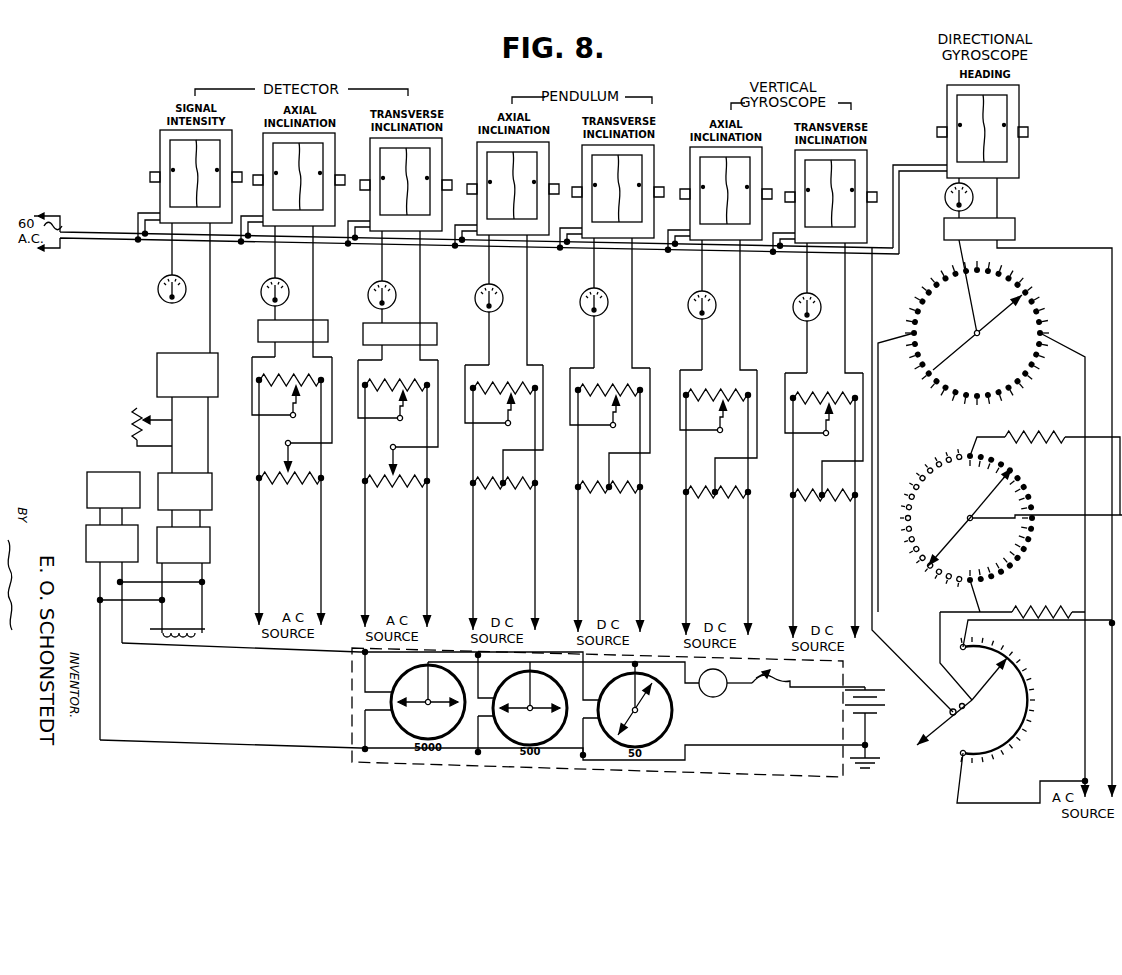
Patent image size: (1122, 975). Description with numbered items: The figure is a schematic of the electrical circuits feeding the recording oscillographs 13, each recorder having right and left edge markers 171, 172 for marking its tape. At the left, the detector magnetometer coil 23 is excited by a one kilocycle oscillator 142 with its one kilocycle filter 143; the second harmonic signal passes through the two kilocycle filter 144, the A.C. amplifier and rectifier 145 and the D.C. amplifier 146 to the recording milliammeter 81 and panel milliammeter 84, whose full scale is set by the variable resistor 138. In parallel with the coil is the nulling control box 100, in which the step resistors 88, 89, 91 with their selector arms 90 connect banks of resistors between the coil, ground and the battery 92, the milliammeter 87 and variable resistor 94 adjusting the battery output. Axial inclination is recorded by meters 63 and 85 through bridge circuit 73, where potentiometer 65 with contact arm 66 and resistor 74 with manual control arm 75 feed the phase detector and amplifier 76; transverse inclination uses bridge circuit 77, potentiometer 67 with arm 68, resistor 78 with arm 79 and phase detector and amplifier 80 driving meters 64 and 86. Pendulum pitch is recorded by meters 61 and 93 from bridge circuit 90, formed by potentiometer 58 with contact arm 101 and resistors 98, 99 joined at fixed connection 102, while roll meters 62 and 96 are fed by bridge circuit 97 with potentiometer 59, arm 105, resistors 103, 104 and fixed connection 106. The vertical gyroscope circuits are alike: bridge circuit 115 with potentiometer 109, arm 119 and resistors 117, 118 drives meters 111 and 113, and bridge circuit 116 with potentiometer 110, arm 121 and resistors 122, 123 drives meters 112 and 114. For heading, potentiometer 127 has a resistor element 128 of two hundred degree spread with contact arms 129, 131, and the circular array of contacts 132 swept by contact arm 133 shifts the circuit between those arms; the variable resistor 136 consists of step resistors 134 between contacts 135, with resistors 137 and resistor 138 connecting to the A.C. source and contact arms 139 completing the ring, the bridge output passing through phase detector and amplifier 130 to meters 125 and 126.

The recording oscillographs 13 is at (152, 204).
The detector magnetometer 23 is at (204, 629).
The potentiometer 58 is at (519, 380).
The potentiometer 59 is at (624, 383).
The recording milliammeter 61 is at (477, 169).
The recording milliammeter 62 is at (582, 171).
The recording milliammeter 63 is at (263, 163).
The recording milliammeter 64 is at (370, 165).
The potentiometer 65 is at (309, 374).
The variable contact arm 66 is at (296, 404).
The potentiometer 67 is at (412, 376).
The contact arm 68 is at (403, 407).
The bridge circuit 73 is at (262, 430).
The resistor 74 is at (304, 485).
The manual control arm 75 is at (291, 459).
The phase detector and amplifier 76 is at (258, 333).
The bridge circuit 77 is at (371, 444).
The resistor 78 is at (406, 489).
The variable contact arm 79 is at (395, 465).
The phase detector and amplifier 80 is at (437, 335).
The recording milliammeter 81 is at (160, 158).
The milliammeter 84 is at (158, 286).
The milliammeter 85 is at (261, 289).
The milliammeter 86 is at (368, 292).
The milliammeter 87 is at (726, 683).
The step resistor 88 is at (445, 666).
The step resistor 89 is at (553, 668).
The selector arm 90 is at (476, 451).
The step resistor 91 is at (662, 675).
The battery 92 is at (872, 734).
The milliammeter 93 is at (476, 295).
The variable resistor 94 is at (790, 681).
The milliammeter 96 is at (581, 299).
The bridge circuit 97 is at (583, 452).
The resistor 98 is at (488, 493).
The resistor 99 is at (515, 493).
The control box 100 is at (842, 680).
The contact arm 101 is at (507, 414).
The fixed connection 102 is at (506, 504).
The resistor 103 is at (591, 497).
The resistor 104 is at (618, 497).
The movable contact arm 105 is at (612, 416).
The fixed connection 106 is at (610, 507).
The potentiometer 109 is at (735, 388).
The potentiometer 110 is at (842, 391).
The recording milliammeter 111 is at (690, 173).
The recording milliammeter 112 is at (795, 176).
The milliammeter 113 is at (688, 302).
The milliammeter 114 is at (794, 304).
The bridge circuit 115 is at (684, 456).
The bridge circuit 116 is at (790, 459).
The resistor 117 is at (698, 502).
The resistor 118 is at (725, 502).
The variable contact arm 119 is at (719, 422).
The variable contact arm 121 is at (825, 425).
The resistor 122 is at (805, 505).
The resistor 123 is at (834, 505).
The recording milliammeter 125 is at (957, 138).
The milliammeter 126 is at (945, 194).
The potentiometer 127 is at (935, 658).
The resistor element 128 is at (1020, 714).
The contact arm 129 is at (993, 684).
The phase detector and amplifier 130 is at (1015, 230).
The contact arm 131 is at (938, 734).
The circular array of contacts 132 is at (909, 278).
The contact arm 133 is at (980, 338).
The step resistors 134 is at (1003, 564).
The contacts 135 is at (997, 480).
The variable resistor 136 is at (934, 576).
The resistors 137 is at (1070, 436).
The variable resistor 138 is at (132, 432).
The contact arms 139 is at (960, 524).
The one kilocycle A.C. oscillator 142 is at (87, 484).
The one kilocycle filter 143 is at (86, 535).
The two kilocycle filter 144 is at (210, 540).
The A.C. amplifier and rectifier 145 is at (204, 473).
The D.C. amplifier 146 is at (157, 382).
The right edge marker 171 is at (1035, 115).
The left edge marker 172 is at (939, 130).